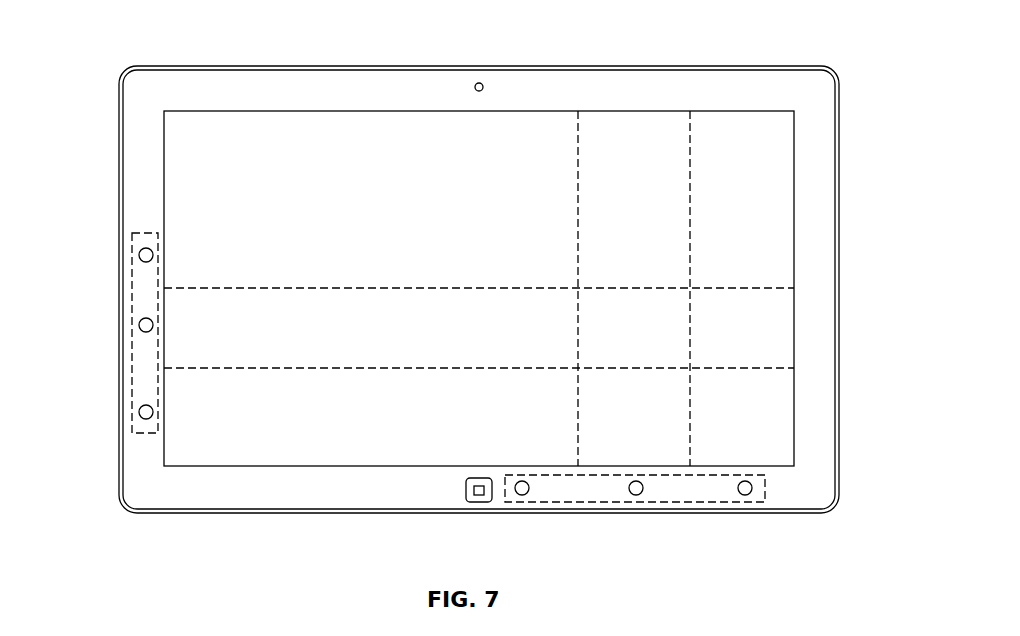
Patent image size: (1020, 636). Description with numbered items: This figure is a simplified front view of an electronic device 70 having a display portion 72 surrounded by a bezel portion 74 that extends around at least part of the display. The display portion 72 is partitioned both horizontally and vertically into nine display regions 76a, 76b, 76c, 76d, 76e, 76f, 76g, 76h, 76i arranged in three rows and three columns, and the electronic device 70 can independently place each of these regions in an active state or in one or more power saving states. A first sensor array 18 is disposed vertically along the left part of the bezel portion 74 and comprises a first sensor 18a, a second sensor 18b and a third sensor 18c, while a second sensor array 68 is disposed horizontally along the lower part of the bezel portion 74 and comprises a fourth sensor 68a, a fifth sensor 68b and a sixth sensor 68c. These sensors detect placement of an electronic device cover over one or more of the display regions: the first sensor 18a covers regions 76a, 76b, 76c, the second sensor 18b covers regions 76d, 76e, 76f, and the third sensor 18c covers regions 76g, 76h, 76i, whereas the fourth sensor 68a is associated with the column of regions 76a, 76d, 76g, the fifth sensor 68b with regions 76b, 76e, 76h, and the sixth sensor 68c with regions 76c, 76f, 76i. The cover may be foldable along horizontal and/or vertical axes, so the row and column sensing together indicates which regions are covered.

The electronic device 70 is at (342, 63).
The display portion 72 is at (181, 140).
The bezel portion 74 is at (128, 171).
The display region 76a is at (371, 199).
The display region 76b is at (634, 199).
The display region 76c is at (742, 199).
The display region 76d is at (371, 328).
The display region 76e is at (634, 328).
The display region 76f is at (742, 328).
The display region 76g is at (371, 417).
The display region 76h is at (634, 417).
The display region 76i is at (742, 417).
The first sensor array 18 is at (132, 373).
The first sensor 18a is at (139, 268).
The second sensor 18b is at (139, 338).
The third sensor 18c is at (139, 401).
The second sensor array 68 is at (767, 488).
The fourth sensor 68a is at (530, 495).
The fifth sensor 68b is at (644, 495).
The sixth sensor 68c is at (738, 495).